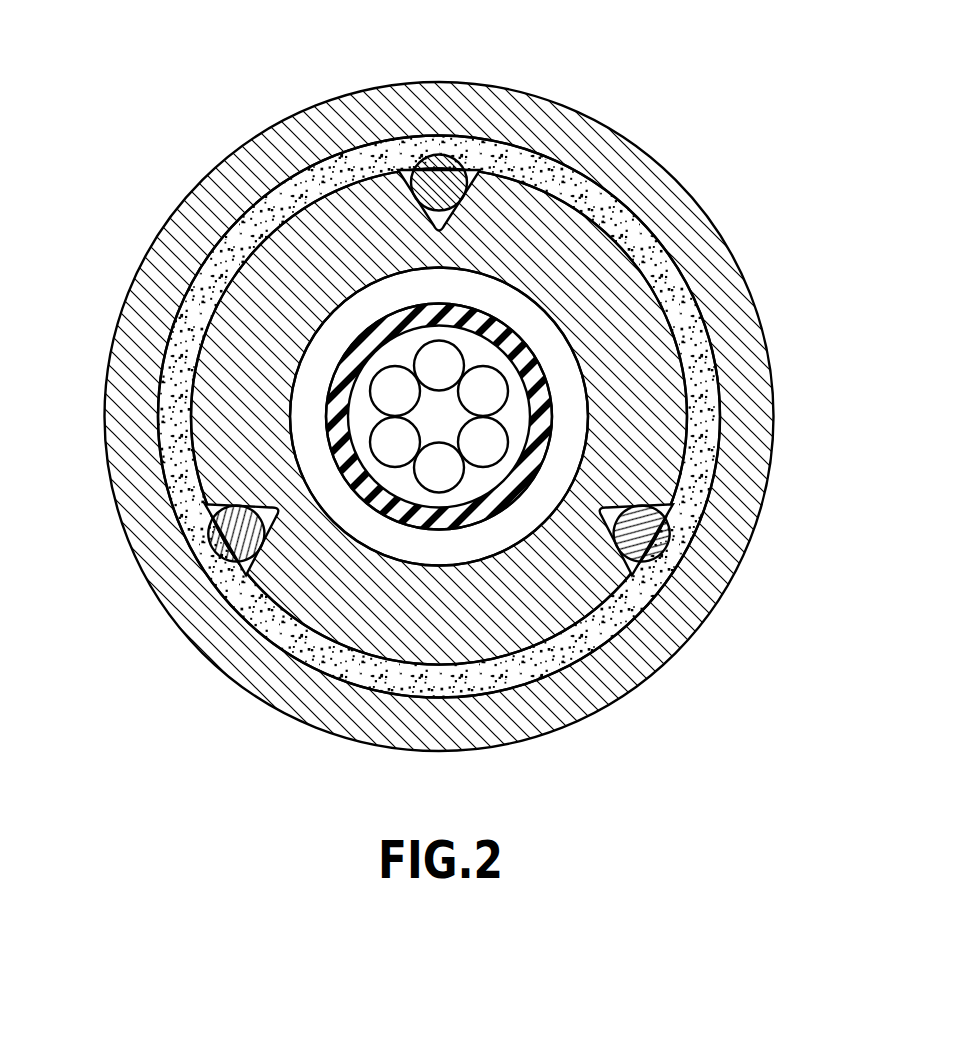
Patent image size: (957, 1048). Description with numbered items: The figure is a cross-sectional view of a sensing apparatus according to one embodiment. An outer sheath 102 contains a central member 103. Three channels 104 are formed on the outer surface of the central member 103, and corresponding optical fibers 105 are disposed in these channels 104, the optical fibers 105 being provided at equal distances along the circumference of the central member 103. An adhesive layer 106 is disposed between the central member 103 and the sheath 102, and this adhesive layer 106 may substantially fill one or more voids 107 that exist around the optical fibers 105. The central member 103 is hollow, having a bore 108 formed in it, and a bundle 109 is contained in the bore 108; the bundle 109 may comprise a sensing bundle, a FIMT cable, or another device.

The sheath 102 is at (586, 690).
The central member 103 is at (598, 283).
The channel 104 is at (478, 202).
The optical fiber 105 is at (444, 158).
The adhesive layer 106 is at (308, 650).
The void 107 is at (218, 502).
The bore 108 is at (298, 350).
The bundle 109 is at (363, 327).